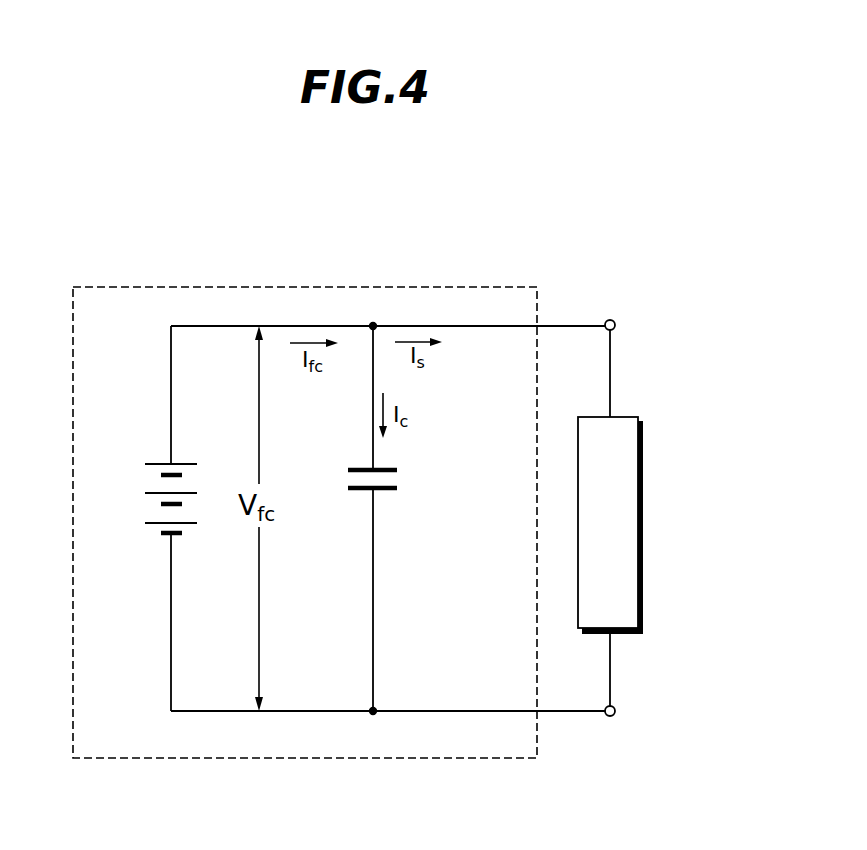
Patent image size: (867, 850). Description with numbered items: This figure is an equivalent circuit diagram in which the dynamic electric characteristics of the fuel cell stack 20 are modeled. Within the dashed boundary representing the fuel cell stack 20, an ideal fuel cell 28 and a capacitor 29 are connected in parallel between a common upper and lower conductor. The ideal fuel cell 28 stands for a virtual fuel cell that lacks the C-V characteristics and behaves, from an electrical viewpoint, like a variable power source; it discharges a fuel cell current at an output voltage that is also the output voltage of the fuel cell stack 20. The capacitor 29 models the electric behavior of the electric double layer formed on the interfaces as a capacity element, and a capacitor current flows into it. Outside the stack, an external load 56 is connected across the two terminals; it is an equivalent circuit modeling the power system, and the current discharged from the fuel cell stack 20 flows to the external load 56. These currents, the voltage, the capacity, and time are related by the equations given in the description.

The fuel cell stack 20 is at (405, 286).
The ideal fuel cell 28 is at (146, 505).
The capacitor 29 is at (382, 492).
The external load 56 is at (643, 505).